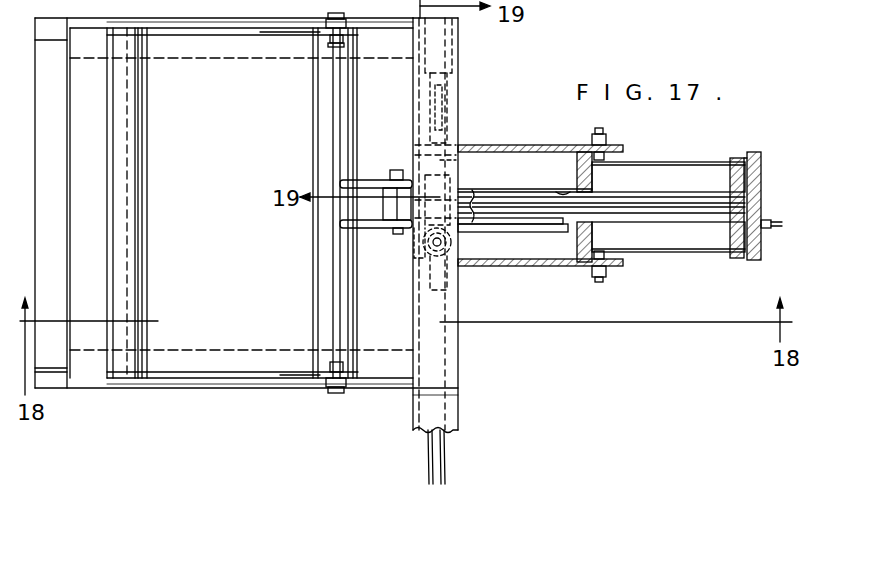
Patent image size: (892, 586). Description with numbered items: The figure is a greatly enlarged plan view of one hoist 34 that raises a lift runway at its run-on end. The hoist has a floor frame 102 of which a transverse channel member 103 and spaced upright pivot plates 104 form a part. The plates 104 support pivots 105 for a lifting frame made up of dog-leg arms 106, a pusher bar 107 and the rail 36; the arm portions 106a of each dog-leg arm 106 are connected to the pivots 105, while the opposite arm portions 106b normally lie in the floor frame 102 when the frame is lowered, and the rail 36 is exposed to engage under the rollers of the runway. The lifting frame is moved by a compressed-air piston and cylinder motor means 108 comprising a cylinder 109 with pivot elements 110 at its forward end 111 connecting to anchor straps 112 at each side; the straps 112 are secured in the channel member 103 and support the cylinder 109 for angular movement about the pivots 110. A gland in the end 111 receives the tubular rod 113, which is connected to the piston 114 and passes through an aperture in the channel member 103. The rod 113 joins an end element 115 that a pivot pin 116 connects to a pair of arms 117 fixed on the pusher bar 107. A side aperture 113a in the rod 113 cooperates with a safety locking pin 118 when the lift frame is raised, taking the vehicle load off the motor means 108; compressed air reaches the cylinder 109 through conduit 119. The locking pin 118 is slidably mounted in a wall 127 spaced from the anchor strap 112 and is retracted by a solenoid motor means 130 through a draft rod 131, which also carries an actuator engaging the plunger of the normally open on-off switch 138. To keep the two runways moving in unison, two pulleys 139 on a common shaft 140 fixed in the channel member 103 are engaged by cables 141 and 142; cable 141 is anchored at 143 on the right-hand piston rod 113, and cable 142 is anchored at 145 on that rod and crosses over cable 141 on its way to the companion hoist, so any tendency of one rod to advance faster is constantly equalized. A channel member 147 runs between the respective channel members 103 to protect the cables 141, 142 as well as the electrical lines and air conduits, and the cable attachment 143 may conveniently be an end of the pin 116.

The hoist 34 is at (494, 72).
The rail 36 is at (142, 152).
The floor frame 102 is at (123, 388).
The channel member 103 is at (452, 372).
The pivot plates 104 is at (305, 25).
The pivots 105 is at (338, 22).
The dog-leg arms 106 is at (265, 35).
The arm portions 106a is at (318, 33).
The opposite arm portions 106b is at (178, 32).
The pusher bar 107 is at (323, 118).
The piston and cylinder motor means 108 is at (648, 154).
The cylinder 109 is at (660, 266).
The pivot elements 110 is at (600, 116).
The forward end 111 is at (594, 236).
The anchor straps 112 is at (552, 146).
The rod 113 is at (668, 180).
The side aperture 113a is at (568, 176).
The piston 114 is at (736, 248).
The end element 115 is at (385, 208).
The pivot pin 116 is at (398, 168).
The arms 117 is at (343, 182).
The safety locking pin 118 is at (456, 160).
The conduit 119 is at (790, 202).
The wall 127 is at (452, 178).
The solenoid motor means 130 is at (456, 40).
The draft rod 131 is at (418, 97).
The on-off switch 138 is at (450, 97).
The pulleys 139 is at (450, 277).
The shaft 140 is at (442, 242).
The cable 141 is at (445, 458).
The cable 142 is at (428, 466).
The cable anchor 143 is at (414, 232).
The cable anchor 145 is at (572, 232).
The channel member 147 is at (452, 415).